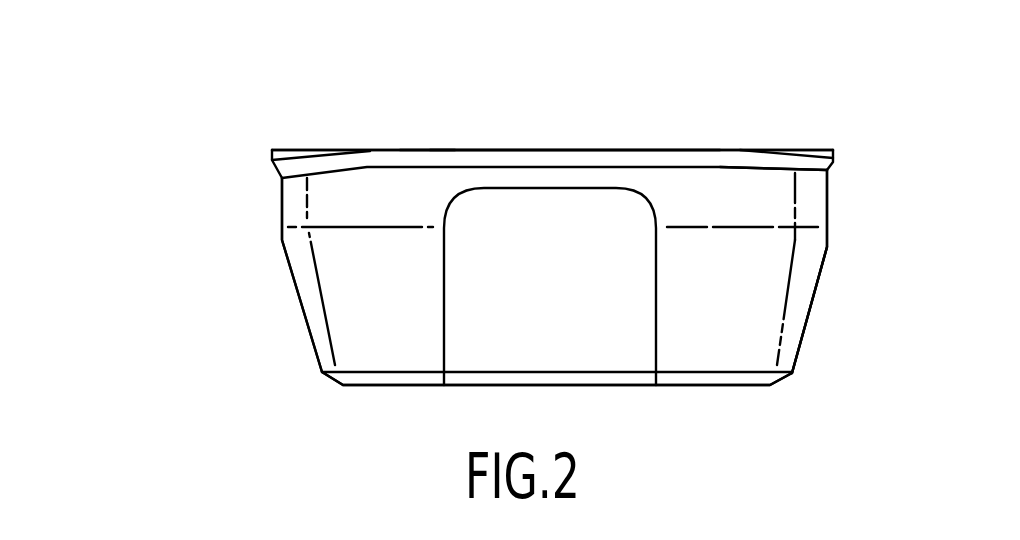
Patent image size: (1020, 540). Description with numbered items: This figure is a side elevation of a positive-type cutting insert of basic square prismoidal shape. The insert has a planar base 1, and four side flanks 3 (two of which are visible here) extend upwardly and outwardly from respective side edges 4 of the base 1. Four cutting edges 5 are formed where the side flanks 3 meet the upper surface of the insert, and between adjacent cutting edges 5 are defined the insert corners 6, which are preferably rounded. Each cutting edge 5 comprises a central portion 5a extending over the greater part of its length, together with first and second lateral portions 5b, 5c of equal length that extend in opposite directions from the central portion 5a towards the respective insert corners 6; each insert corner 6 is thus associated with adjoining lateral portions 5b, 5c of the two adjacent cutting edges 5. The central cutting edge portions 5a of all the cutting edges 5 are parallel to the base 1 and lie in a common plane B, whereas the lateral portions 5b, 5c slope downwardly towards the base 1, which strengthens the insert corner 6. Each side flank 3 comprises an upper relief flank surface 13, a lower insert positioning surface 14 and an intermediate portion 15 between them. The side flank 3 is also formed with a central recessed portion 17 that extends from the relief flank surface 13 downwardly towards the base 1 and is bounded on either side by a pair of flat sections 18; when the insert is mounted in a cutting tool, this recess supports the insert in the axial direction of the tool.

The planar base 1 is at (789, 70).
The side flank 3 is at (373, 305).
The side edge 4 is at (398, 374).
The cutting edge 5 is at (492, 135).
The central cutting edge portion 5a is at (562, 149).
The first lateral cutting edge portion 5b is at (300, 151).
The second lateral cutting edge portion 5c is at (778, 150).
The insert corner 6 is at (272, 152).
The relief flank surface 13 is at (828, 168).
The insert positioning surface 14 is at (753, 286).
The intermediate portion 15 is at (797, 200).
The central recessed portion 17 is at (482, 363).
The flat section 18 is at (345, 264).
The common plane B is at (441, 130).